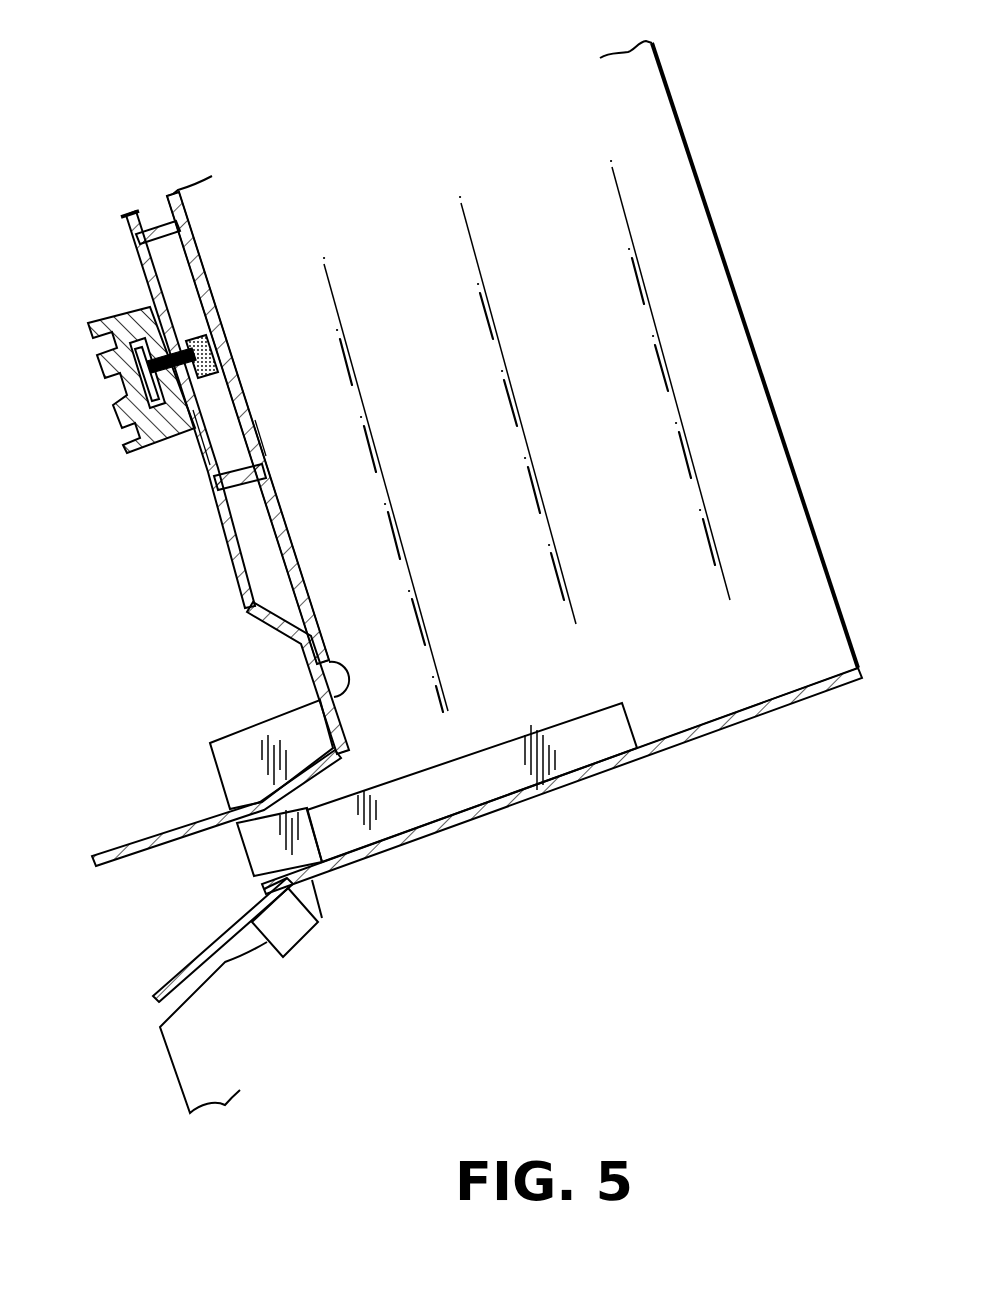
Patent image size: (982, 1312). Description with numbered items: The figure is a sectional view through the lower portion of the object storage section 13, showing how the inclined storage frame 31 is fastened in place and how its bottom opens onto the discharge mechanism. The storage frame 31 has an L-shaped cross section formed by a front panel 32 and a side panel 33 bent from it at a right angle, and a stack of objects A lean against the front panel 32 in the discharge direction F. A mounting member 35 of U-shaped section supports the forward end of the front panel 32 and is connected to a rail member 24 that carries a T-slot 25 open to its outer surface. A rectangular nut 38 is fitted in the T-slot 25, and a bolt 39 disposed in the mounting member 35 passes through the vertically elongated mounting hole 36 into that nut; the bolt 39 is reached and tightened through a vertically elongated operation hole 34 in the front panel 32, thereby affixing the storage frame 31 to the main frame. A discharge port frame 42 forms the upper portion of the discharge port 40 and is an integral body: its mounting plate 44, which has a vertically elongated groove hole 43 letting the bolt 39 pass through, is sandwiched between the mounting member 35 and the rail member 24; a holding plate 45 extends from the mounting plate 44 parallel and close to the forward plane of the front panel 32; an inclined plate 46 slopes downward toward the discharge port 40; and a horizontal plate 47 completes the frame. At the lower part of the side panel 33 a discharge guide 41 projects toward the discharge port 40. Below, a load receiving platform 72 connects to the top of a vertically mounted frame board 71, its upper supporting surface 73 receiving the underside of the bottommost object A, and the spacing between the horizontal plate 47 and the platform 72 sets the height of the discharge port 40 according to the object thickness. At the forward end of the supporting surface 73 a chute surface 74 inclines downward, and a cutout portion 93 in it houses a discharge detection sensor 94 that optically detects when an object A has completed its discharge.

The object storage section 13 is at (402, 82).
The storage frame 31 is at (668, 72).
The side panel 33 is at (660, 130).
The front panel 32 is at (196, 250).
The operation hole 34 is at (240, 402).
The mounting plate 44 is at (228, 547).
The groove hole 43 is at (196, 445).
The discharge port frame 42 is at (242, 605).
The mounting member 35 is at (228, 463).
The mounting hole 36 is at (232, 455).
The holding plate 45 is at (345, 722).
The inclined plate 46 is at (328, 773).
The rail member 24 is at (92, 322).
The T-slot 25 is at (113, 358).
The rectangular nut 38 is at (160, 376).
The bolt 39 is at (196, 358).
The discharge guide 41 is at (243, 745).
The discharge port 40 is at (260, 818).
The object A is at (555, 737).
The discharge direction F is at (268, 848).
The supporting surface 73 is at (753, 713).
The load receiving platform 72 is at (688, 731).
The horizontal plate 47 is at (114, 862).
The chute surface 74 is at (158, 983).
The cutout portion 93 is at (250, 912).
The discharge detection sensor 94 is at (296, 934).
The frame board 71 is at (183, 1060).